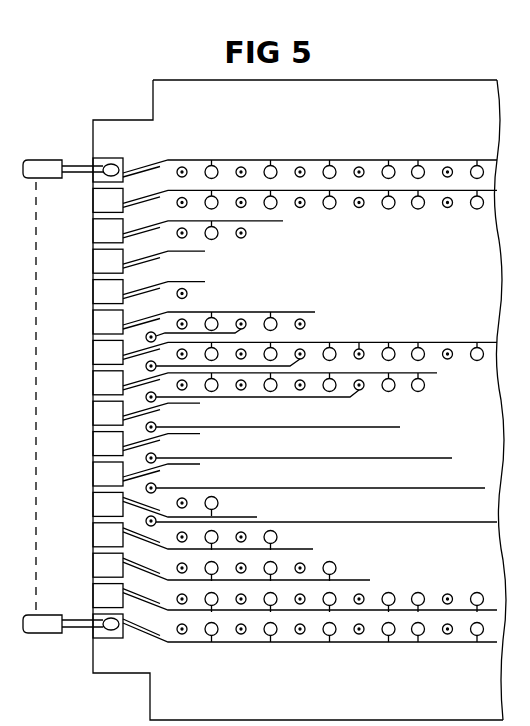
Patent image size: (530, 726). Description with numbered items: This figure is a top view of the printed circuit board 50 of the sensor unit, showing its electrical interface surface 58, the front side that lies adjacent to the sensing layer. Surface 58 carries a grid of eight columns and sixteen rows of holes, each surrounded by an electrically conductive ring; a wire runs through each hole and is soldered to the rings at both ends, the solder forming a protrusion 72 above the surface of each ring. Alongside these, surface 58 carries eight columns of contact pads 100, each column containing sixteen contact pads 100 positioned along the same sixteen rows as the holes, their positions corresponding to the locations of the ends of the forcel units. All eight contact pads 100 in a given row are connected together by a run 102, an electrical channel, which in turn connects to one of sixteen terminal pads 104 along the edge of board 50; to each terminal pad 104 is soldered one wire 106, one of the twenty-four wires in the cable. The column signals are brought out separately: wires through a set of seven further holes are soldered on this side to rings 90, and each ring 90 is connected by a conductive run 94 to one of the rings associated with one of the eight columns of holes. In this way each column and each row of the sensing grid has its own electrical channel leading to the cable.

The printed circuit board 50 is at (153, 78).
The electrical interface surface 58 is at (351, 98).
The protrusion 72 is at (245, 318).
The ring 90 is at (149, 331).
The conductive run 94 is at (197, 331).
The contact pads 100 is at (210, 637).
The run 102 is at (340, 160).
The terminal pads 104 is at (102, 535).
The wire 106 is at (75, 165).